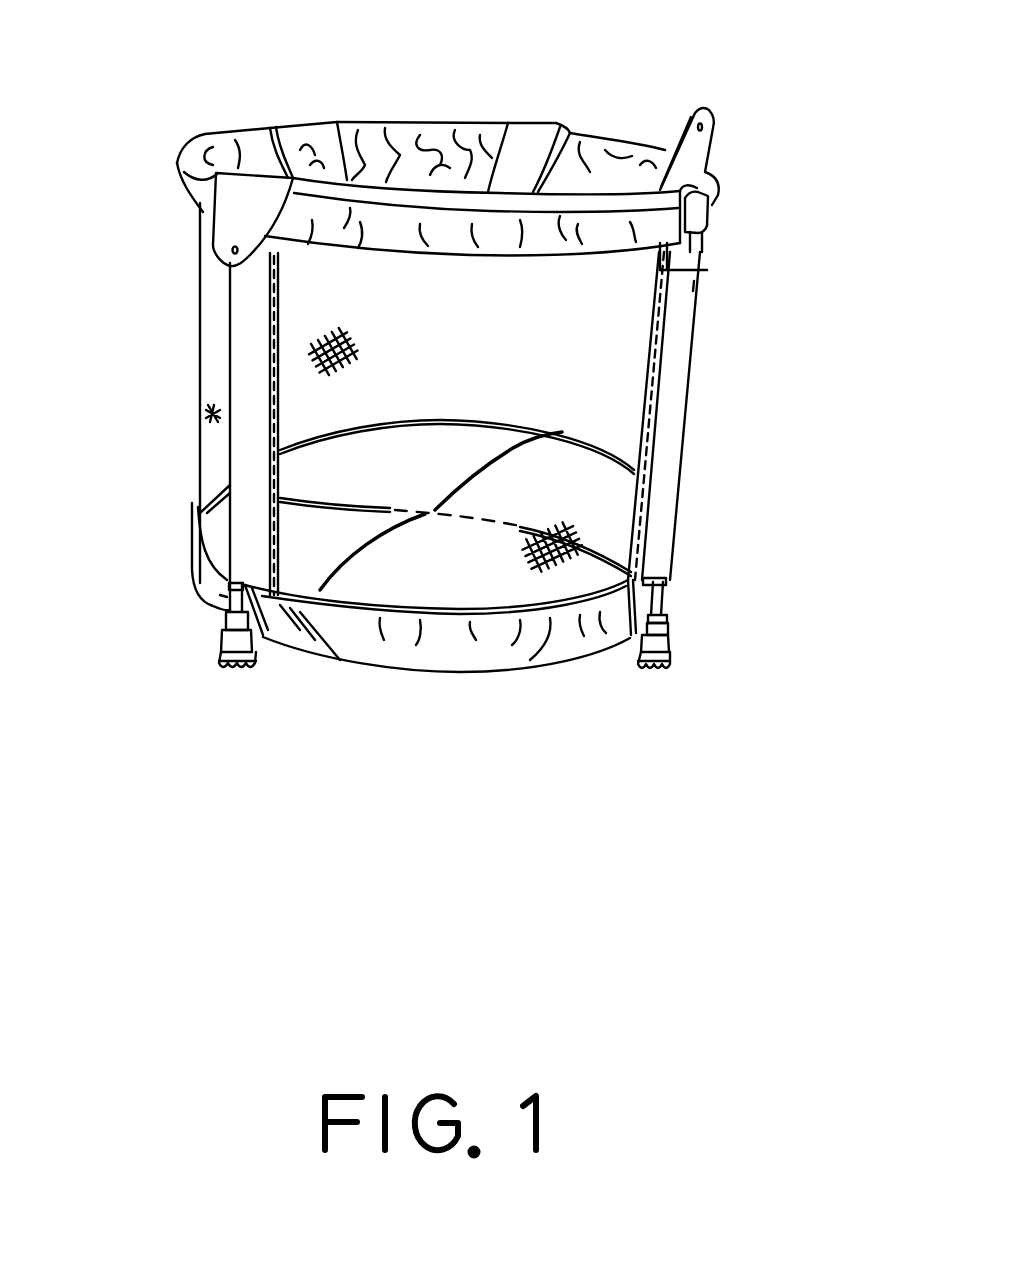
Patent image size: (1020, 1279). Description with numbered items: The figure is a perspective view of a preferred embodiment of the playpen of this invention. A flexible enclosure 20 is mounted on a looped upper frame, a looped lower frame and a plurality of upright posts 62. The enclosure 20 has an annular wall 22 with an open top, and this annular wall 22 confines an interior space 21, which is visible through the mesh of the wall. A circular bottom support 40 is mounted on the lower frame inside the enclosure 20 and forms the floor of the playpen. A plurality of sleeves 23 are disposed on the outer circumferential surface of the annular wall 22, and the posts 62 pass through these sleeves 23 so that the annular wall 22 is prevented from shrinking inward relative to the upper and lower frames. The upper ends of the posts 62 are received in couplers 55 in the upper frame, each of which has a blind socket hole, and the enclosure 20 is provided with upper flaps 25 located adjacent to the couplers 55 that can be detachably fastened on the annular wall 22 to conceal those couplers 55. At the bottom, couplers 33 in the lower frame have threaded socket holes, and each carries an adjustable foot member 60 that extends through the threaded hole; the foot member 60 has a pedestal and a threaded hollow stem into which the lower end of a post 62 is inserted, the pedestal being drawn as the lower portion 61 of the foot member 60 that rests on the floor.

The flexible enclosure 20 is at (507, 683).
The space 21 is at (413, 155).
The annular wall 22 is at (633, 422).
The sleeves 23 is at (240, 350).
The upper flaps 25 is at (230, 197).
The couplers 33 is at (222, 645).
The circular bottom support 40 is at (403, 577).
The couplers 55 is at (707, 215).
The adjustable foot member 60 is at (684, 595).
The foot pad 61 is at (671, 675).
The posts 62 is at (207, 578).